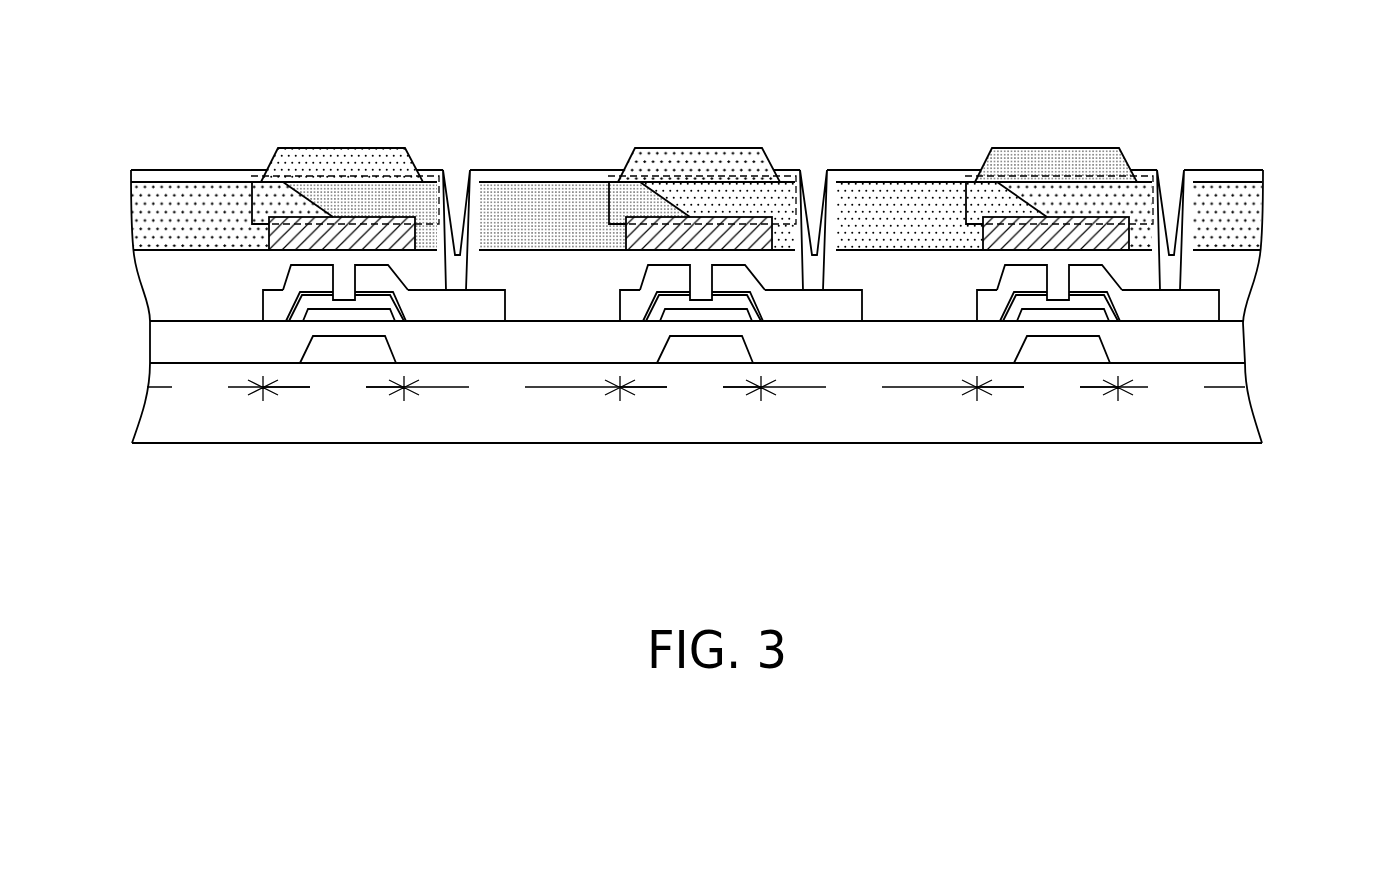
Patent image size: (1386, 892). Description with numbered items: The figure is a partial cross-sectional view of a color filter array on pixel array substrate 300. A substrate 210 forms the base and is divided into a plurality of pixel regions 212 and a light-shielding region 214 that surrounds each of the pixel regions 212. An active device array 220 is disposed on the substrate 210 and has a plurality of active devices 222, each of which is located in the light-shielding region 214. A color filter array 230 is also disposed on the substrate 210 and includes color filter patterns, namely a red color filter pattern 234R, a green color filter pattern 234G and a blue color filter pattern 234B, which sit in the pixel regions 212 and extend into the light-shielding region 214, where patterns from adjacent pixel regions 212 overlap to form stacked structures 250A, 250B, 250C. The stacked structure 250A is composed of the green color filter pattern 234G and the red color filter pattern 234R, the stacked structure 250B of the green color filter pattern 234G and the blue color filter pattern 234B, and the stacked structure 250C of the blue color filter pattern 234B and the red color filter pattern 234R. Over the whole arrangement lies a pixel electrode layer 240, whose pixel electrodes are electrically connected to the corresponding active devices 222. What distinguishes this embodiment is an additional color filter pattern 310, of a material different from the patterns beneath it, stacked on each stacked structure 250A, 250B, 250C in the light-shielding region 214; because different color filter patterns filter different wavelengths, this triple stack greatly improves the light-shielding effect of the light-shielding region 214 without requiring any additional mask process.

The color filter array on pixel array substrate 300 is at (1298, 551).
The substrate 210 is at (1247, 417).
The pixel regions 212 is at (696, 391).
The light-shielding region 214 is at (690, 391).
The active device array 220 is at (1281, 255).
The active devices 222 is at (273, 278).
The color filter array 230 is at (1281, 183).
The red color filter pattern 234R is at (157, 193).
The green color filter pattern 234G is at (783, 192).
The blue color filter pattern 234B is at (437, 178).
The pixel electrode layer 240 is at (1279, 162).
The stacked structure 250A is at (962, 196).
The stacked structure 250B is at (605, 196).
The stacked structure 250C is at (248, 196).
The color filter pattern 310 is at (338, 157).